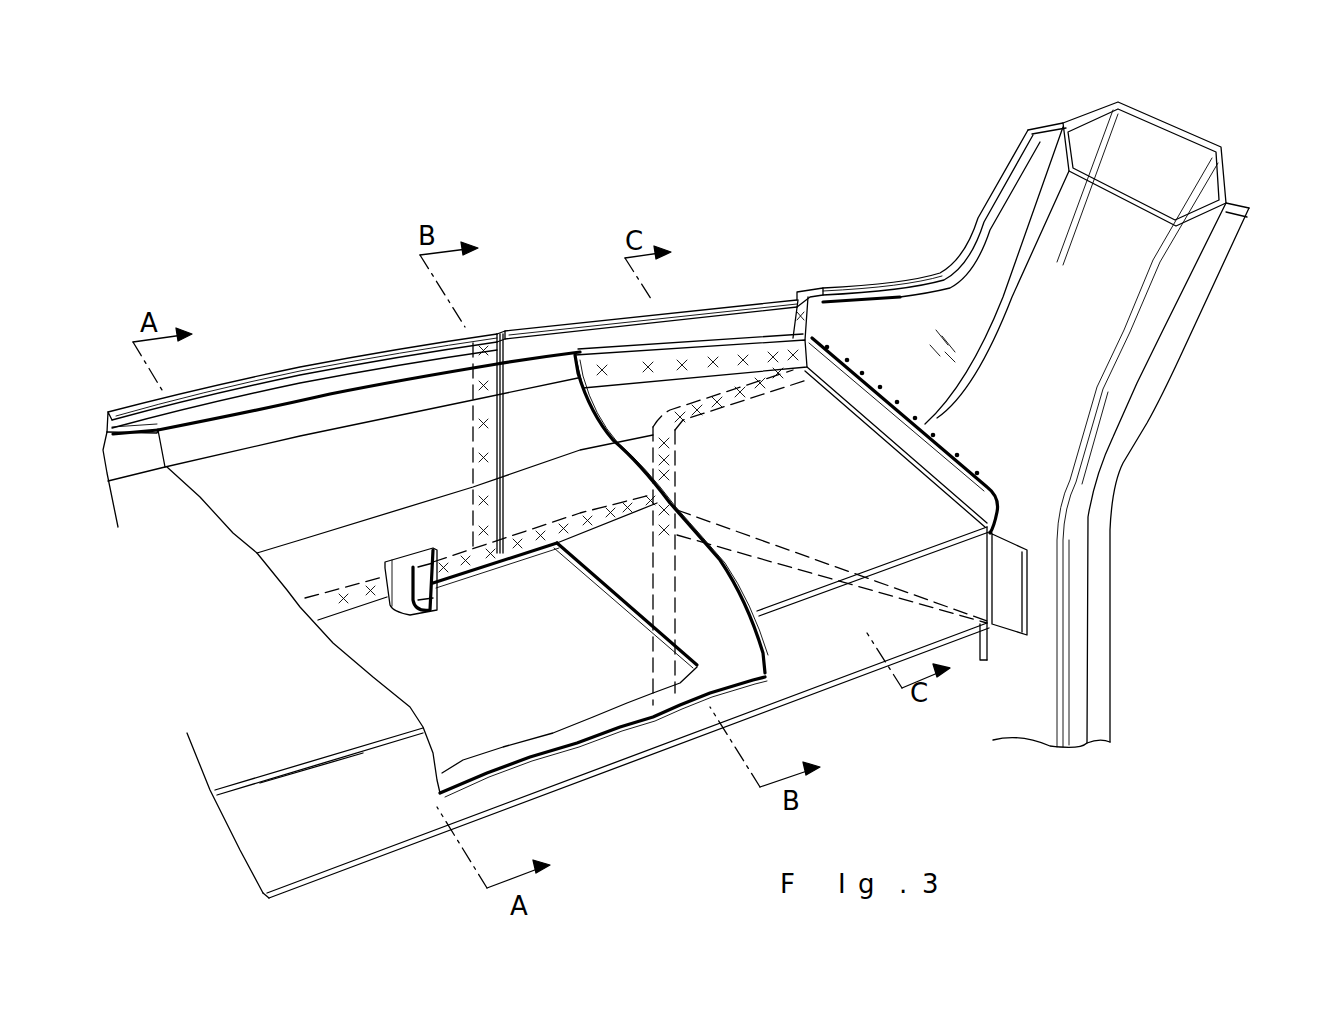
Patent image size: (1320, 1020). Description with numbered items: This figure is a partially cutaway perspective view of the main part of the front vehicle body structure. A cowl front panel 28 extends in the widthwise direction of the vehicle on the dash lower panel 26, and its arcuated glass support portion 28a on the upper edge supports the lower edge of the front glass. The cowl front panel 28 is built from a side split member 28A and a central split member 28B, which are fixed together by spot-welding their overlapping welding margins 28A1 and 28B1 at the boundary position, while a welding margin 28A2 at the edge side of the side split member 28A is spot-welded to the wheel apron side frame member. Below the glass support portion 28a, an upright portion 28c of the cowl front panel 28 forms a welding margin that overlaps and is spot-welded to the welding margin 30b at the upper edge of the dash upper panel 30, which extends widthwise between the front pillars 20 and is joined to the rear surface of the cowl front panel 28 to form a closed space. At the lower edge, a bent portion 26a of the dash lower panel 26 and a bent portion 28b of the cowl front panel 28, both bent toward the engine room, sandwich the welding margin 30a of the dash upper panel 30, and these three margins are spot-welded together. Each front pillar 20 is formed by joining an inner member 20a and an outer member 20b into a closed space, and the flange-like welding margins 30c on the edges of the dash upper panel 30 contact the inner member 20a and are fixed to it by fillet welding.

The front pillar 20 is at (1070, 372).
The inner member 20a is at (1063, 214).
The outer member 20b is at (1168, 140).
The dash lower panel 26 is at (543, 706).
The bent portion 26a is at (427, 620).
The cowl front panel 28 is at (562, 418).
The glass support portion 28a is at (307, 378).
The bent portion 28b is at (408, 553).
The upright portion 28c is at (380, 452).
The side split member 28A is at (575, 352).
The welding margin 28A1 is at (497, 333).
The welding margin 28A2 is at (812, 296).
The central split member 28B is at (350, 387).
The welding margin 28B1 is at (506, 332).
The dash upper panel 30 is at (843, 651).
The welding margin 30a is at (390, 605).
The welding margin 30b is at (672, 352).
The welding margin 30c is at (945, 455).